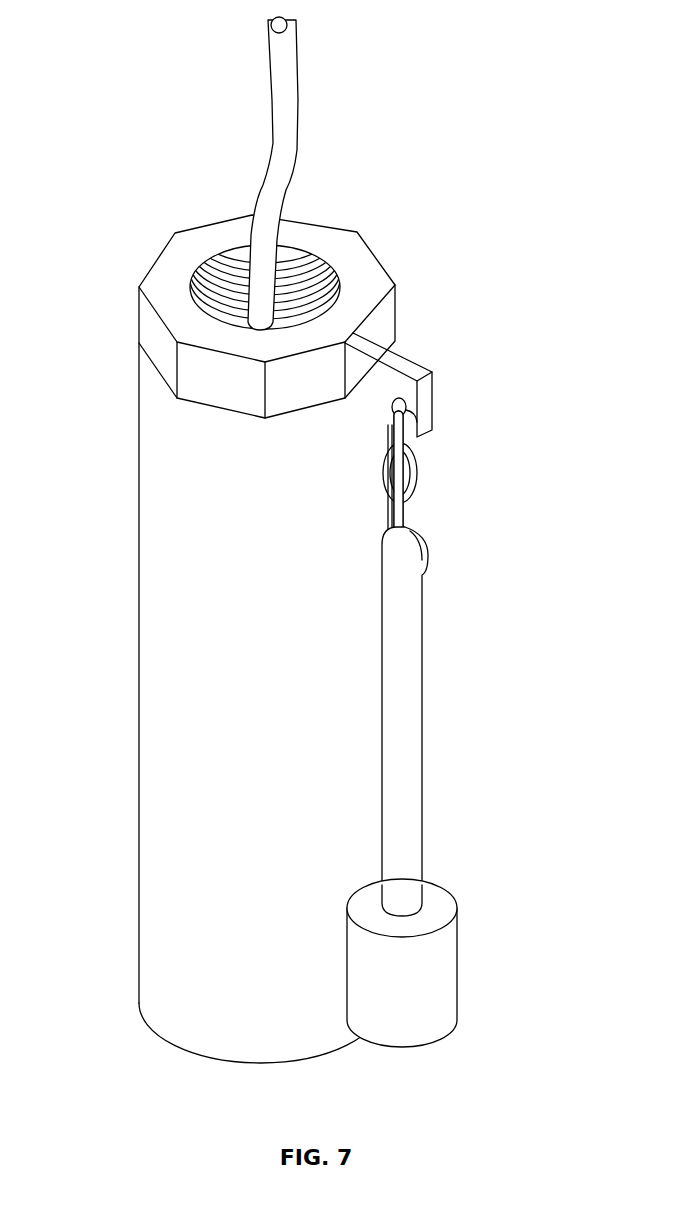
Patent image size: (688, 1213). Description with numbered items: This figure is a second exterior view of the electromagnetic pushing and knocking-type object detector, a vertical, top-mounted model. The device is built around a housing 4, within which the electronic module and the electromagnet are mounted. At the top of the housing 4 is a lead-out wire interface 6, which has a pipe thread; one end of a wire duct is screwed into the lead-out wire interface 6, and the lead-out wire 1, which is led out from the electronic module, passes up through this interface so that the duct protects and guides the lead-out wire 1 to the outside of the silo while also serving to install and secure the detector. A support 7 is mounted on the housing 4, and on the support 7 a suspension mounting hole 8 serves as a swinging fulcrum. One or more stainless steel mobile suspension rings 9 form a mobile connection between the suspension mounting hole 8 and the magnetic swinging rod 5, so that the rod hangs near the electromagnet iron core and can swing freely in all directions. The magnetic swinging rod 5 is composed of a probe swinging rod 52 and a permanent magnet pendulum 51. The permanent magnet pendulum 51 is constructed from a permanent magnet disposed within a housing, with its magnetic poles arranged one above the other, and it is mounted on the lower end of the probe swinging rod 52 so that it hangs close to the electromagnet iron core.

The lead-out wire 1 is at (290, 157).
The housing 4 is at (156, 571).
The magnetic swinging rod 5 is at (474, 792).
The lead-out wire interface 6 is at (353, 265).
The support 7 is at (398, 358).
The suspension mounting hole 8 is at (407, 417).
The mobile suspension rings 9 is at (417, 488).
The permanent magnet pendulum 51 is at (447, 1015).
The probe swinging rod 52 is at (410, 662).